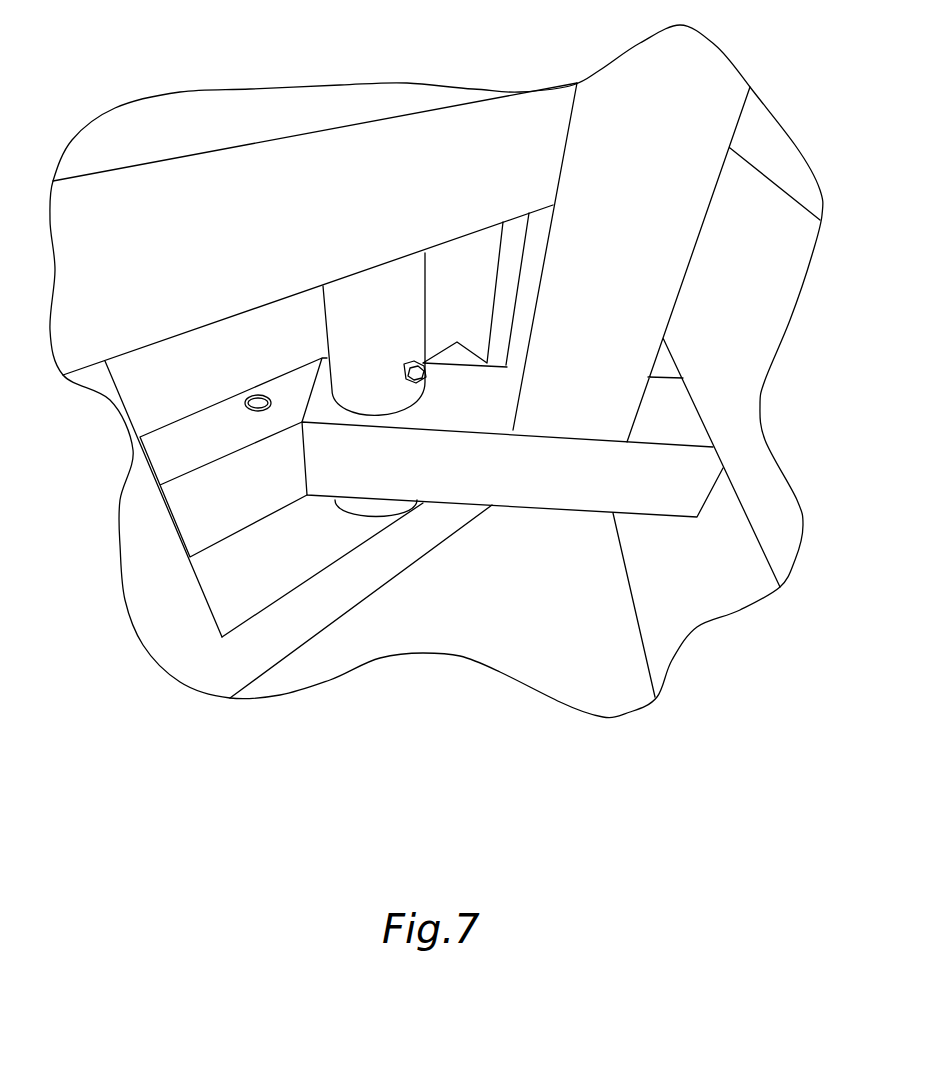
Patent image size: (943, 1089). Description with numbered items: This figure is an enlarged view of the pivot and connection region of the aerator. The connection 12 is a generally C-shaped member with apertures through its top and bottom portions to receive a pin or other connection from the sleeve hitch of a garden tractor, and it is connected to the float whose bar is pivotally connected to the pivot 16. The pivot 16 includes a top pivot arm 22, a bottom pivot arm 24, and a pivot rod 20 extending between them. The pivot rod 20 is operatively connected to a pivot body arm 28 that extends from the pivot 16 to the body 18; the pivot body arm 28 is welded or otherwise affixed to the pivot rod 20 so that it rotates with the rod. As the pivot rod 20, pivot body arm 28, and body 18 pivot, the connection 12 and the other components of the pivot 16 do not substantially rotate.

The connection 12 is at (210, 420).
The pivot 16 is at (367, 603).
The body 18 is at (627, 575).
The pivot rod 20 is at (410, 295).
The top pivot arm 22 is at (100, 275).
The bottom pivot arm 24 is at (412, 557).
The pivot body arm 28 is at (320, 372).